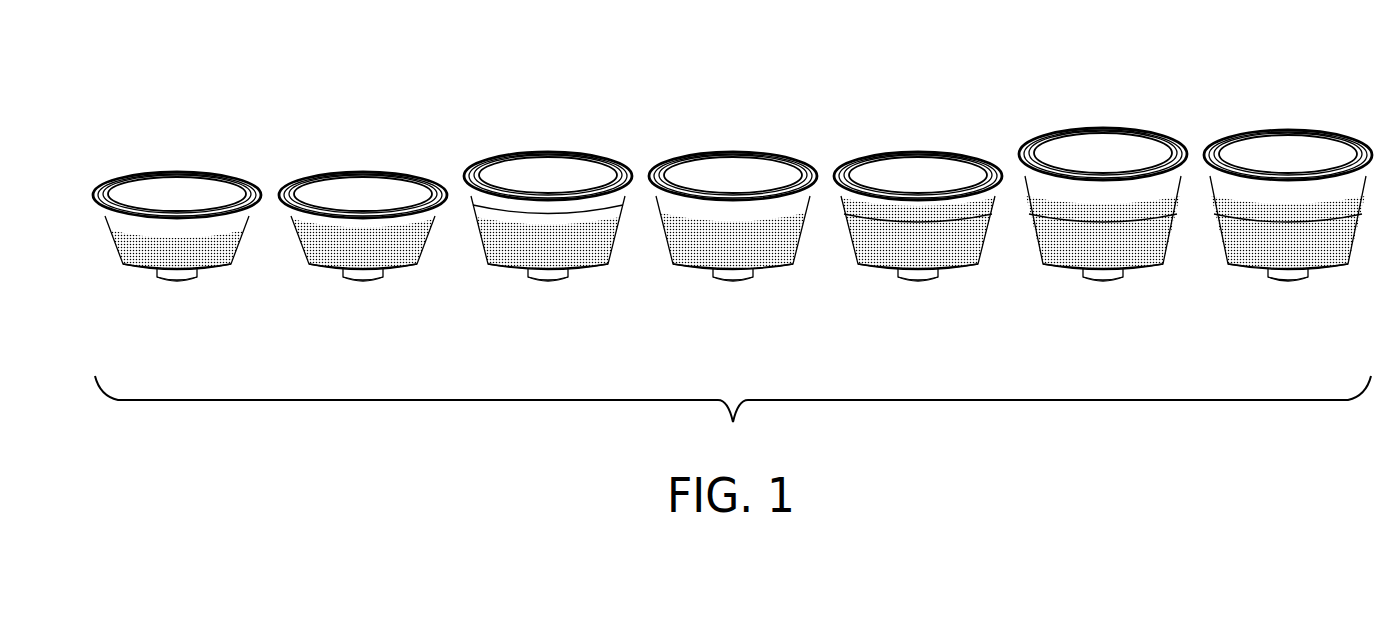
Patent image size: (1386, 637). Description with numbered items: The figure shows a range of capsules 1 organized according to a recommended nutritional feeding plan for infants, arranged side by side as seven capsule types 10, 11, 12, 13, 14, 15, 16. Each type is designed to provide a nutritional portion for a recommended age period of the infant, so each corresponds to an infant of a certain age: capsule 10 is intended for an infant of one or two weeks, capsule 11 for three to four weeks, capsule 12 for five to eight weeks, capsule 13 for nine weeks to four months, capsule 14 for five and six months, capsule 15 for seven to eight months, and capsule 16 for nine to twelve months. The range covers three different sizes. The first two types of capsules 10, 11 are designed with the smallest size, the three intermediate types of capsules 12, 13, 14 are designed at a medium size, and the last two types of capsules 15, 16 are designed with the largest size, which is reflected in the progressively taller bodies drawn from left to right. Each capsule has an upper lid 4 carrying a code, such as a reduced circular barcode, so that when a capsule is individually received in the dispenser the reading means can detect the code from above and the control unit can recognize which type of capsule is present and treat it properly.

The capsules 1 is at (733, 412).
The upper lid 4 is at (403, 187).
The capsule 10 is at (180, 304).
The capsule 11 is at (366, 304).
The capsule 12 is at (551, 304).
The capsule 13 is at (736, 304).
The capsule 14 is at (921, 304).
The capsule 15 is at (1106, 304).
The capsule 16 is at (1291, 304).